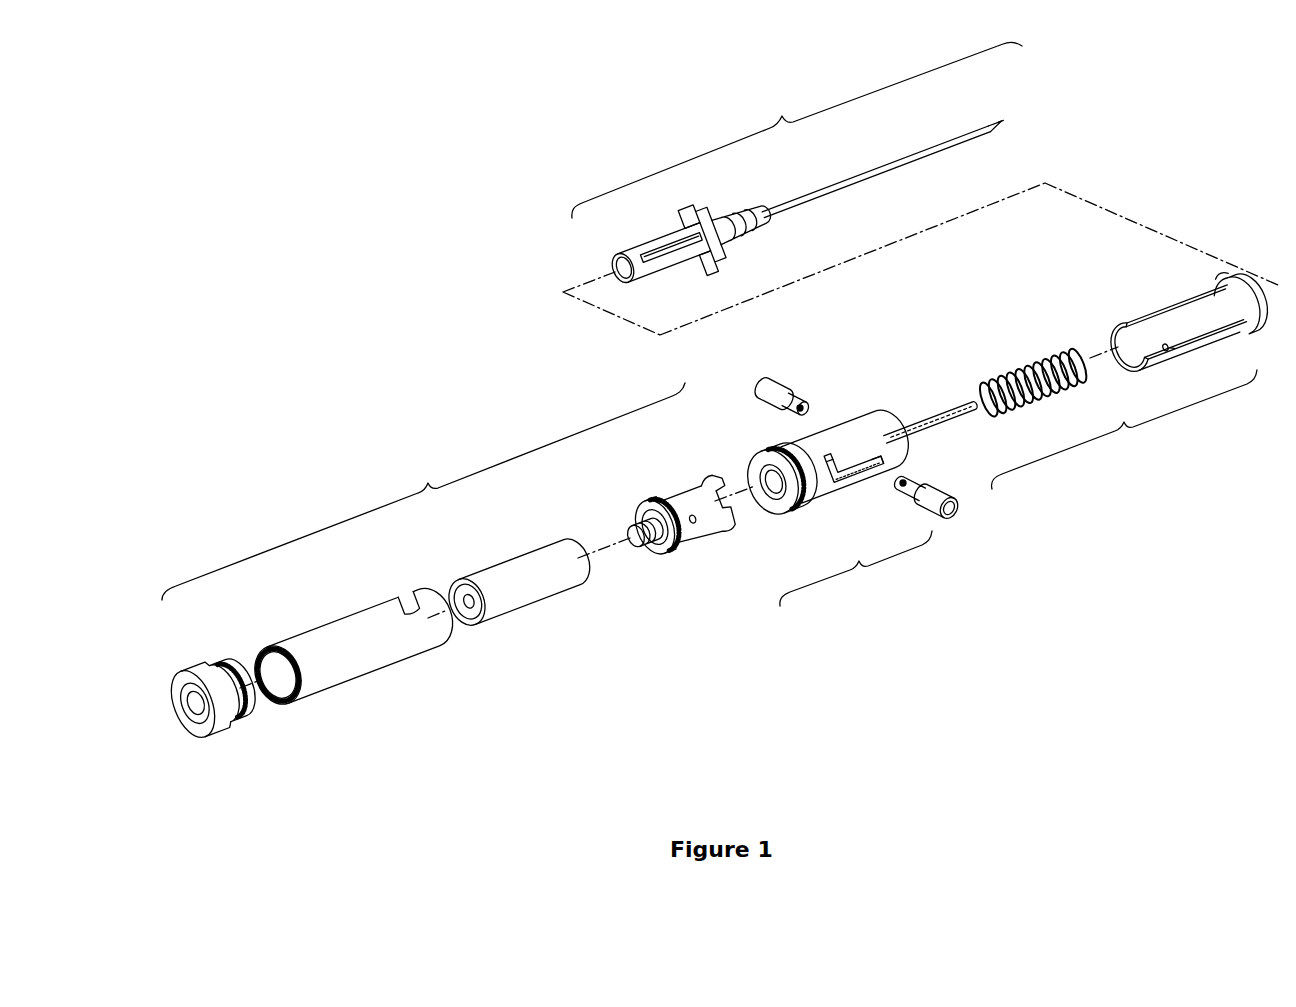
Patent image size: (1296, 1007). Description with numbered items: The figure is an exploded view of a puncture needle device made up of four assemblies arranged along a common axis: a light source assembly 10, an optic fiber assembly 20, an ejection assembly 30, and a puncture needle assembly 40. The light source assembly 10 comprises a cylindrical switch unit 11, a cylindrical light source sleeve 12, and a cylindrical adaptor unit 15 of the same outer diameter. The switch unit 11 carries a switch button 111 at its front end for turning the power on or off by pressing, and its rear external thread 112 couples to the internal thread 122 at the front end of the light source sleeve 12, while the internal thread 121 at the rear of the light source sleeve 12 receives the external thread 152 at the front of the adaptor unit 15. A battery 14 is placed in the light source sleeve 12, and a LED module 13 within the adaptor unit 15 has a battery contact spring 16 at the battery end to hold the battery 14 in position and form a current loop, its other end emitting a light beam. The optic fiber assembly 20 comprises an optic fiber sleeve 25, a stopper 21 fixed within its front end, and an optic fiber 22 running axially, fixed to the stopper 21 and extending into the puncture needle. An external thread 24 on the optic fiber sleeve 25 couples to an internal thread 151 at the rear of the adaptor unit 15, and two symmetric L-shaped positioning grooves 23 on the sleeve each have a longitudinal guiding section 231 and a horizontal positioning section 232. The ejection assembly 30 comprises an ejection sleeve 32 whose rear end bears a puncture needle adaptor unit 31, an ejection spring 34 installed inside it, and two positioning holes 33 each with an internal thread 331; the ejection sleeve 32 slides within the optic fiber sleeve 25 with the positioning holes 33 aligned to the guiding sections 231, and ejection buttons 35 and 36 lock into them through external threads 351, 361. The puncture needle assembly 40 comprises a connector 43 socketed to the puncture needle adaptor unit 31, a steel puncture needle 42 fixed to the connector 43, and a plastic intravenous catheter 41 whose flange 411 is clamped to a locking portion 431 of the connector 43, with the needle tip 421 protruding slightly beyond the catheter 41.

The light source assembly 10 is at (456, 596).
The switch unit 11 is at (223, 689).
The switch button 111 is at (192, 704).
The external thread 112 is at (247, 712).
The light source sleeve 12 is at (338, 609).
The internal thread 121 is at (407, 596).
The internal thread 122 is at (266, 646).
The LED module 13 is at (693, 523).
The battery 14 is at (507, 575).
The adaptor unit 15 is at (696, 513).
The internal thread 151 is at (716, 488).
The external thread 152 is at (655, 503).
The battery contact spring 16 is at (632, 532).
The optic fiber assembly 20 is at (855, 470).
The stopper 21 is at (768, 492).
The optic fiber 22 is at (952, 416).
The positioning groove 23 is at (848, 483).
The longitudinal guiding section 231 is at (872, 482).
The horizontal positioning section 232 is at (826, 452).
The external thread 24 is at (790, 503).
The optic fiber sleeve 25 is at (864, 428).
The ejection assembly 30 is at (1024, 360).
The puncture needle adaptor unit 31 is at (1233, 296).
The ejection sleeve 32 is at (1188, 314).
The positioning hole 33 is at (1165, 352).
The internal thread 331 is at (1172, 351).
The ejection spring 34 is at (1037, 400).
The ejection button 35 is at (790, 382).
The external thread 351 is at (803, 407).
The ejection button 36 is at (932, 497).
The external thread 361 is at (906, 482).
The puncture needle assembly 40 is at (824, 191).
The intravenous catheter 41 is at (847, 182).
The flange 411 is at (725, 226).
The puncture needle 42 is at (976, 127).
The needle tip 421 is at (1000, 122).
The connector 43 is at (657, 246).
The locking portion 431 is at (726, 250).